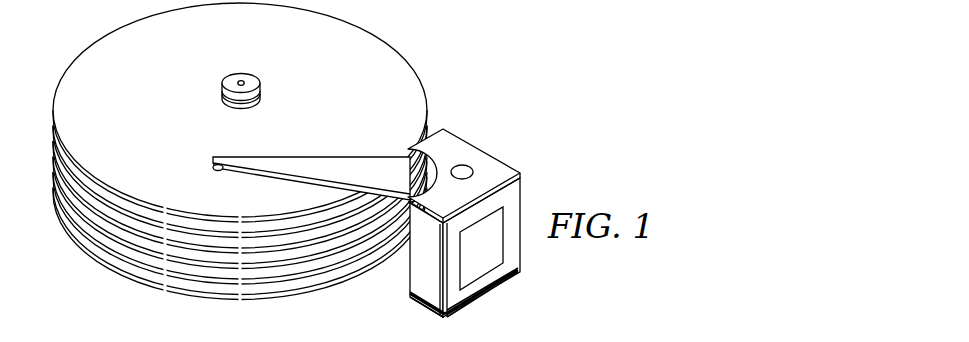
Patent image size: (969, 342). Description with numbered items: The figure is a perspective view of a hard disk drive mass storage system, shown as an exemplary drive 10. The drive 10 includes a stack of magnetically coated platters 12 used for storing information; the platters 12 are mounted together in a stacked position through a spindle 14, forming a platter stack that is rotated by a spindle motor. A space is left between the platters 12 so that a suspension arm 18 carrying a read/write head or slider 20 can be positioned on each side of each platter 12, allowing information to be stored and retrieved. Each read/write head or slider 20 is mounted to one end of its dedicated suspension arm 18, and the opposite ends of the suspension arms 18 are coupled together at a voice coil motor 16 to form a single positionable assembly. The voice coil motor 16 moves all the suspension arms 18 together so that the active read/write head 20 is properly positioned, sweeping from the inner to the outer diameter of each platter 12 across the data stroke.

The drive 10 is at (262, 160).
The magnetically coated platters 12 is at (43, 97).
The spindle 14 is at (237, 75).
The voice coil motor 16 is at (488, 162).
The suspension arm 18 is at (286, 158).
The read/write head or slider 20 is at (211, 170).